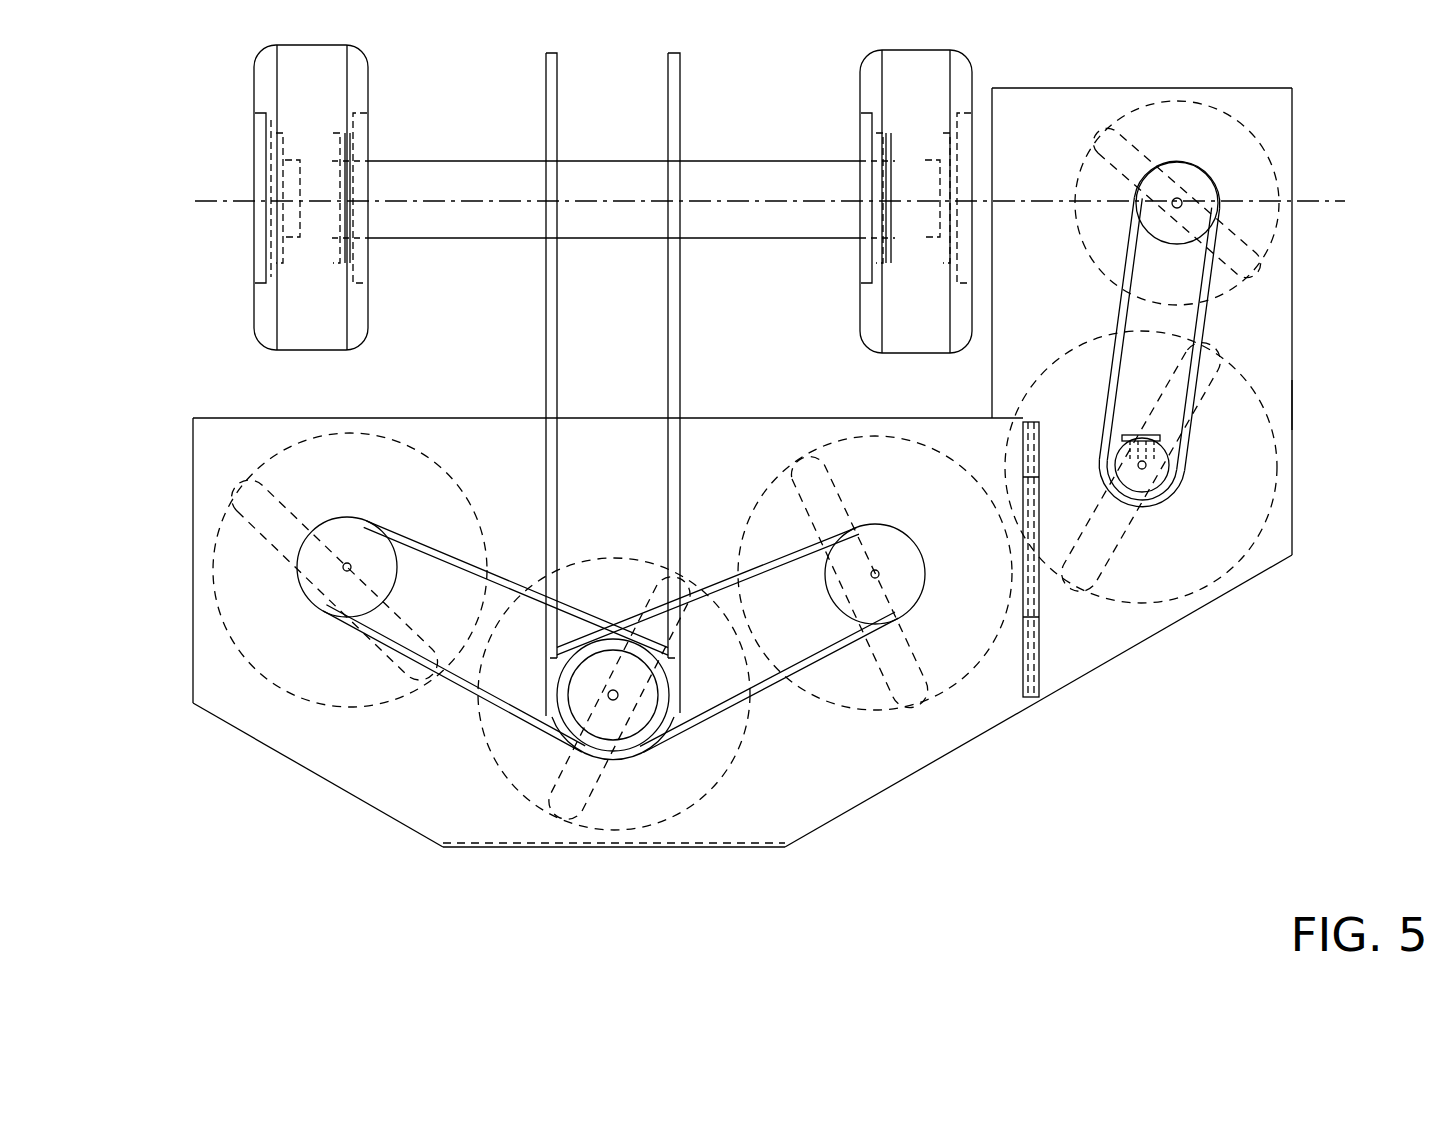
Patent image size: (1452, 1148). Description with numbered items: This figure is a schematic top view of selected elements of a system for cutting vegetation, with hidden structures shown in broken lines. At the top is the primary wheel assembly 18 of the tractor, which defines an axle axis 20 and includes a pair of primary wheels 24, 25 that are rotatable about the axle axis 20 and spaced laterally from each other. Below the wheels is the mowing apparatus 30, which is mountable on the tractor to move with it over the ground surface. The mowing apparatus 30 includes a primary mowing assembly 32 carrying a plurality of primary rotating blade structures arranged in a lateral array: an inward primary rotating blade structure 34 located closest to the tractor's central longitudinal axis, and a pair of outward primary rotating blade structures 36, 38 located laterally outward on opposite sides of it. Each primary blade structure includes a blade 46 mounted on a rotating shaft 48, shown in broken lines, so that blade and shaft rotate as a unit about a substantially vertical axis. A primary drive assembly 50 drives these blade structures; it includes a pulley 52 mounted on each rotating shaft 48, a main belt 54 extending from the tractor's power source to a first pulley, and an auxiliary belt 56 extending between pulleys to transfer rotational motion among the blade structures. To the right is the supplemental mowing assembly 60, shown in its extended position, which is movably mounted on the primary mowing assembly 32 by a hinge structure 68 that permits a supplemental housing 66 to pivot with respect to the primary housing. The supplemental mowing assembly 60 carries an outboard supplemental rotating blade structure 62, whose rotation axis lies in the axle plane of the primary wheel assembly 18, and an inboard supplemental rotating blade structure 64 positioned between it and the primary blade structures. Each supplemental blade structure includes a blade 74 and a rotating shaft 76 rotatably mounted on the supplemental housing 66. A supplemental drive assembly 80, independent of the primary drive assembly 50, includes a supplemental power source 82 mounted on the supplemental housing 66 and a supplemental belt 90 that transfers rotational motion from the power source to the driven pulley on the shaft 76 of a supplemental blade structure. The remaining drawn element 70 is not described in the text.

The primary wheel assembly 18 is at (1000, 68).
The axle axis 20 is at (1343, 207).
The primary wheel 24 is at (300, 320).
The primary wheel 25 is at (905, 330).
The mowing apparatus 30 is at (1052, 815).
The primary mowing assembly 32 is at (313, 838).
The inward primary rotating blade structure 34 is at (514, 812).
The outward primary rotating blade structure 36 is at (272, 705).
The outward primary rotating blade structure 38 is at (948, 718).
The blade 46 is at (268, 520).
The rotating shaft 48 is at (345, 567).
The primary drive assembly 50 is at (682, 762).
The pulley 52 is at (622, 735).
The main belt 54 is at (682, 116).
The auxiliary belt 56 is at (765, 670).
The supplemental mowing assembly 60 is at (1338, 505).
The outboard supplemental rotating blade structure 62 is at (1270, 128).
The inboard supplemental rotating blade structure 64 is at (1262, 365).
The supplemental housing 66 is at (1270, 396).
The hinge structure 68 is at (1045, 662).
The angled lower edge 70 is at (1088, 640).
The blade 74 is at (1250, 235).
The rotating shaft 76 is at (1185, 205).
The supplemental drive assembly 80 is at (1205, 467).
The supplemental power source 82 is at (1165, 441).
The supplemental belt 90 is at (1200, 330).